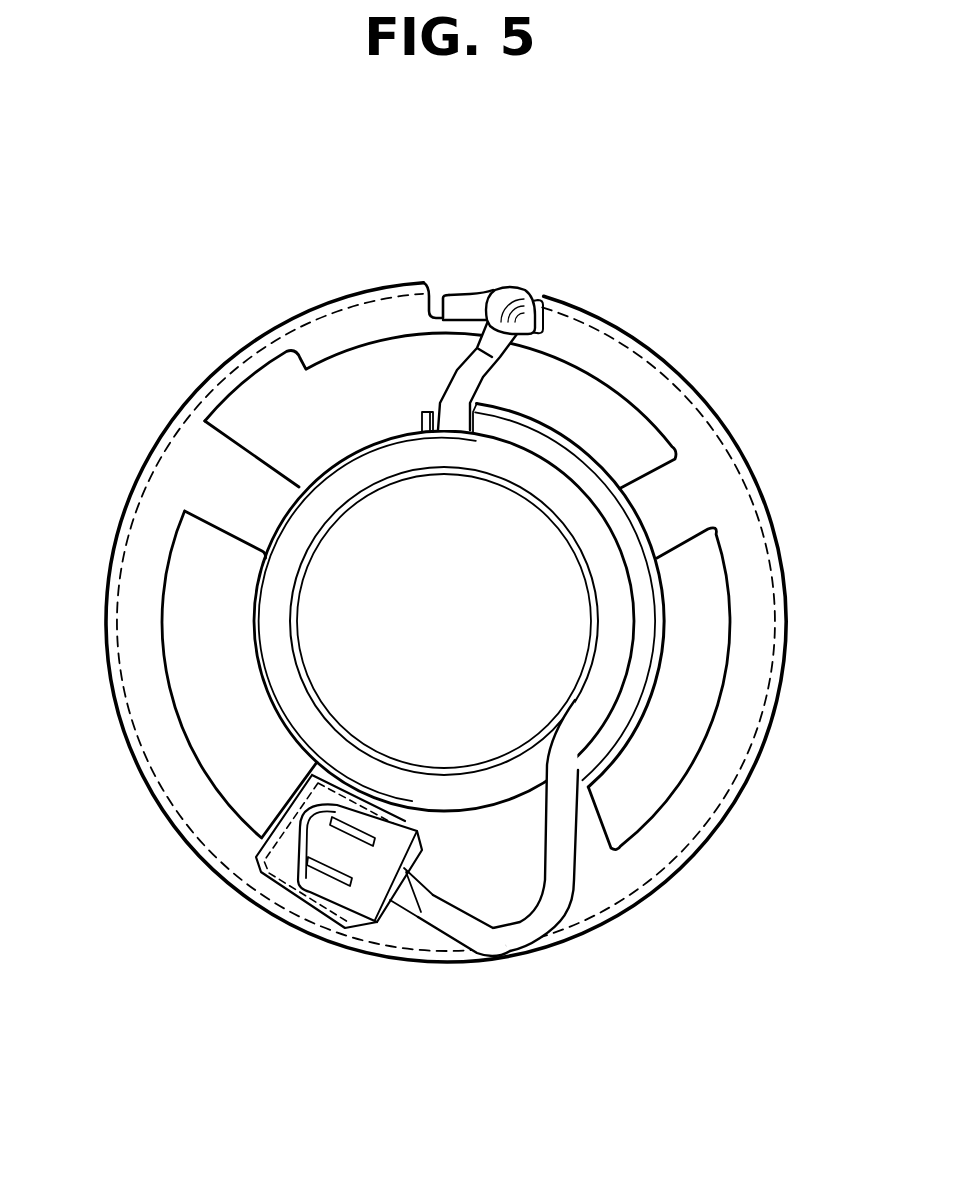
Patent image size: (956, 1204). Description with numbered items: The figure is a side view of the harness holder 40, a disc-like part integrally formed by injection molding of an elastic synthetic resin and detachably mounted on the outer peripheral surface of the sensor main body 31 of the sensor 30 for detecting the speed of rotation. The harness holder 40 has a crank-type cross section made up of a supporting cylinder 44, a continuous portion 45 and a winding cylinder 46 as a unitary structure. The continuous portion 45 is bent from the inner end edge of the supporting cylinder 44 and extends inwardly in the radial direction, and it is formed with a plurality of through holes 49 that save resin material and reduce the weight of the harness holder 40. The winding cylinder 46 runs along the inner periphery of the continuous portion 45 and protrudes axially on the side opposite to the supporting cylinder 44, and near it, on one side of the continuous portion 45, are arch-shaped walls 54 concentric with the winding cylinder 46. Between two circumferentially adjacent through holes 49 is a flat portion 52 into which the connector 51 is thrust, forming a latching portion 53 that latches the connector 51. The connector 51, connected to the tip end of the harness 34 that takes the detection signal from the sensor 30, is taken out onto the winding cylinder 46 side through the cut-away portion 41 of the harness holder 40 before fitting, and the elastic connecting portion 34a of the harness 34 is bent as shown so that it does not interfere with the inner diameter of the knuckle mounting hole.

The sensor 30 is at (447, 280).
The sensor main body 31 is at (528, 293).
The harness 34 is at (573, 860).
The connecting portion 34a is at (500, 290).
The harness holder 40 is at (434, 605).
The cut-away portion 41 is at (552, 305).
The supporting cylinder 44 is at (712, 412).
The continuous portion 45 is at (182, 797).
The winding cylinder 46 is at (599, 607).
The through holes 49 is at (168, 676).
The connector 51 is at (360, 883).
The flat portion 52 is at (520, 878).
The latching portion 53 is at (280, 867).
The arch-shaped walls 54 is at (254, 582).